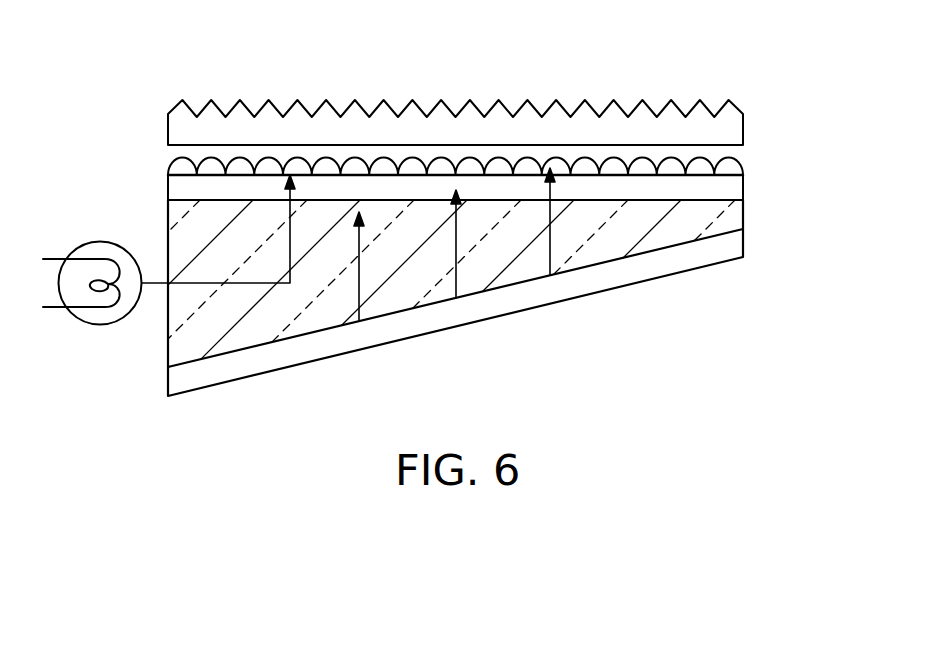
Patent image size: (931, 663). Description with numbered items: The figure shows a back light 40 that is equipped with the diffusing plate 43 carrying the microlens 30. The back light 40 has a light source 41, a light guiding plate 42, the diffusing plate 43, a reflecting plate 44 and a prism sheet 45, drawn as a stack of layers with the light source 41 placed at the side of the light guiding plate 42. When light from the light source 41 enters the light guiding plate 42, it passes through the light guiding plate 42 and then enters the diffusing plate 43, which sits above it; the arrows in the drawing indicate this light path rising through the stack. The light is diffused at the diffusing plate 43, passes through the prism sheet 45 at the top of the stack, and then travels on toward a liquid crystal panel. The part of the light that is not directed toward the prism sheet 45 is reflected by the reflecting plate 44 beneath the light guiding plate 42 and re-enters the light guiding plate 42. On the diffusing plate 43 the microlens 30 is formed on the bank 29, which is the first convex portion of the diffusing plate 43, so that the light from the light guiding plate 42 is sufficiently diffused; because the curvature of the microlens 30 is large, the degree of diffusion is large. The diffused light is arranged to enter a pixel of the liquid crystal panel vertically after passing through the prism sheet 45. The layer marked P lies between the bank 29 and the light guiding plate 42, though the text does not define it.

The back light 40 is at (693, 70).
The light source 41 is at (100, 242).
The light guiding plate 42 is at (743, 215).
The diffusing plate 43 is at (808, 131).
The reflecting plate 44 is at (743, 243).
The prism sheet 45 is at (735, 131).
The microlens 30 is at (743, 155).
The bank 29 is at (743, 174).
The pattern layer P is at (737, 187).